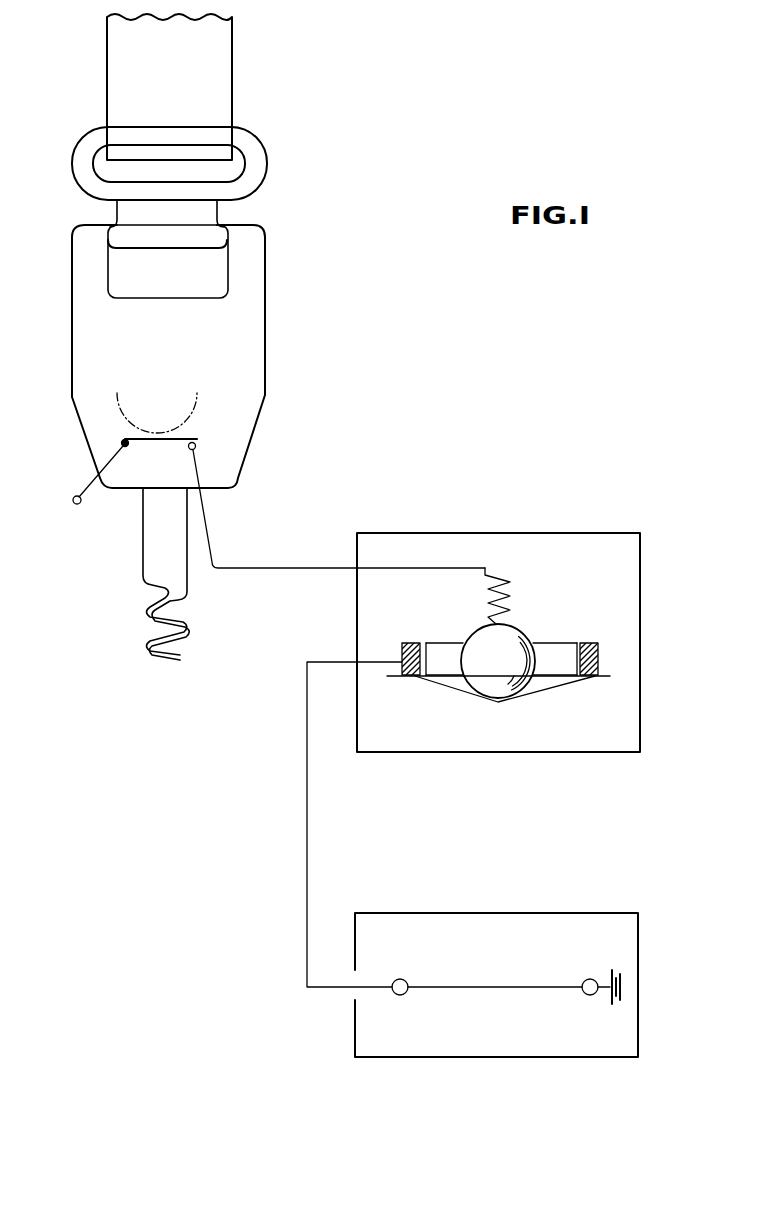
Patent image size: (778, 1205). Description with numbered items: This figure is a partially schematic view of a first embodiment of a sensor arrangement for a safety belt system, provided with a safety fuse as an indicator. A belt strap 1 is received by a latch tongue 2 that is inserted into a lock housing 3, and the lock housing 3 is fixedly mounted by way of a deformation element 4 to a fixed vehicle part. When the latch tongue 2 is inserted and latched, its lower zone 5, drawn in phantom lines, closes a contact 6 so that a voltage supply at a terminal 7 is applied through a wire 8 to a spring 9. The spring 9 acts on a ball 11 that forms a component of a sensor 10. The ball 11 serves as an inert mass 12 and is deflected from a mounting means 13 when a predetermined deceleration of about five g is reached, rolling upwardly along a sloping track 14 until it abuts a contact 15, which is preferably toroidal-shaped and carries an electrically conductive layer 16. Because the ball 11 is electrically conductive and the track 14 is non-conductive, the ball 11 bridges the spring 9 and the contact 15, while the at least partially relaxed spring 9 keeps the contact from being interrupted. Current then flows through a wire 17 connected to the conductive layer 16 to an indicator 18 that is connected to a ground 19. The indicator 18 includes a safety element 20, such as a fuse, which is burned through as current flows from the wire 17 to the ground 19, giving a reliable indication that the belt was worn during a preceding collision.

The belt strap 1 is at (215, 69).
The latch tongue 2 is at (202, 212).
The lock housing 3 is at (87, 360).
The deformation element 4 is at (188, 625).
The lower zone 5 is at (185, 417).
The contact 6 is at (153, 441).
The terminal 7 is at (75, 504).
The wire 8 is at (100, 471).
The spring 9 is at (503, 578).
The sensor 10 is at (606, 613).
The ball 11 is at (522, 690).
The inert mass 12 is at (469, 634).
The mounting means 13 is at (470, 706).
The sloping track 14 is at (447, 688).
The contact 15 is at (402, 645).
The electrically conductive layer 16 is at (578, 655).
The wire 17 is at (312, 825).
The indicator 18 is at (548, 957).
The ground 19 is at (623, 988).
The safety element 20 is at (515, 990).